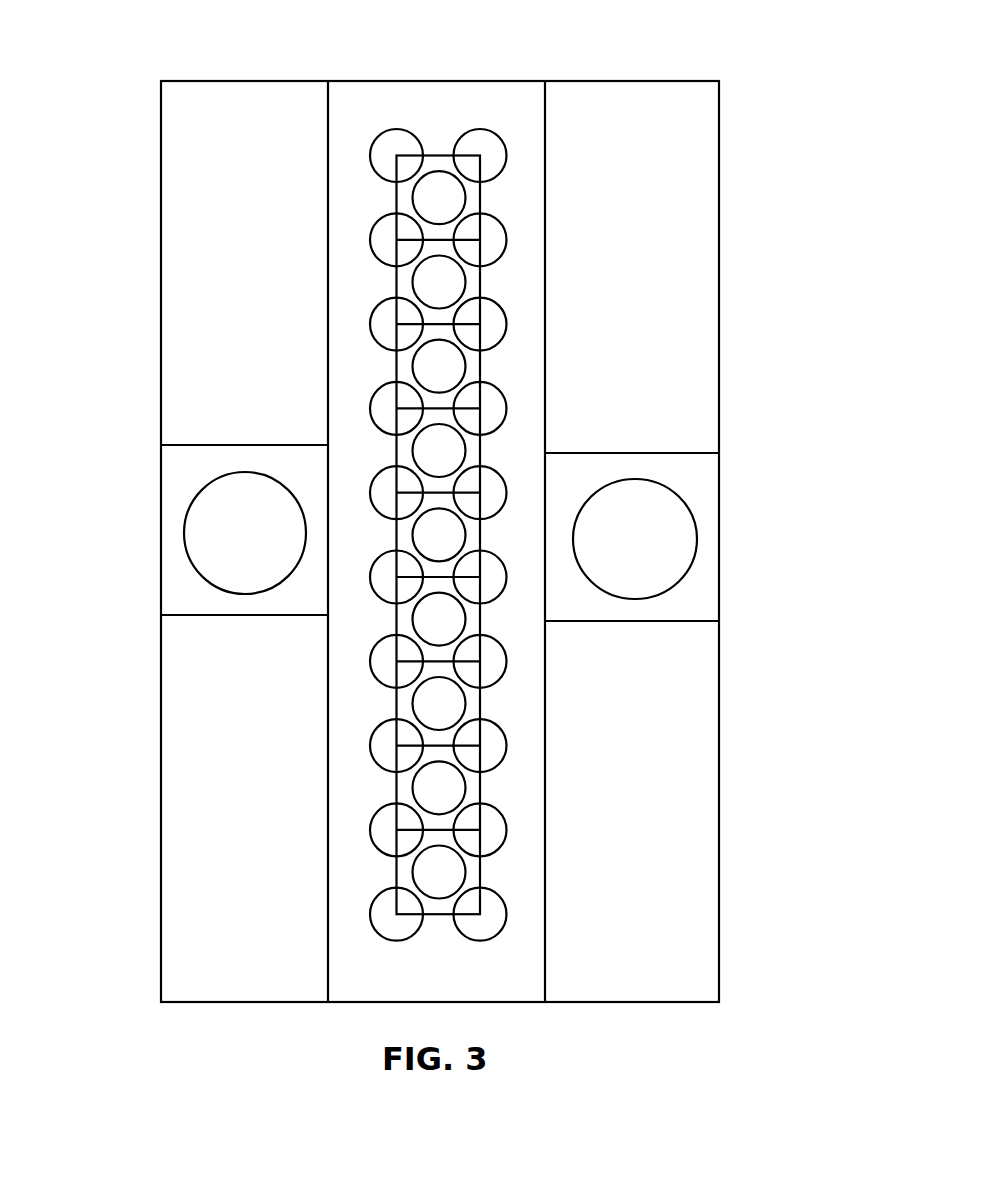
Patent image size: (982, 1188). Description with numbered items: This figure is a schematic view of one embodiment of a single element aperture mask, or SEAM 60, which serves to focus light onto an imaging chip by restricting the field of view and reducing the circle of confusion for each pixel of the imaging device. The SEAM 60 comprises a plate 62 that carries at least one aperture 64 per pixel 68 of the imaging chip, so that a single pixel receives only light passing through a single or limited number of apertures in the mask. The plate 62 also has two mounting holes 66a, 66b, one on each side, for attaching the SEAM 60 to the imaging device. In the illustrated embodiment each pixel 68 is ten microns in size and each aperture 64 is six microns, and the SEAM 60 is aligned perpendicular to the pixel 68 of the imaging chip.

The single element aperture mask (SEAM) 60 is at (751, 100).
The plate 62 is at (152, 130).
The aperture 64 is at (505, 398).
The mounting hole 66a is at (200, 544).
The mounting hole 66b is at (685, 544).
The pixel 68 is at (389, 278).